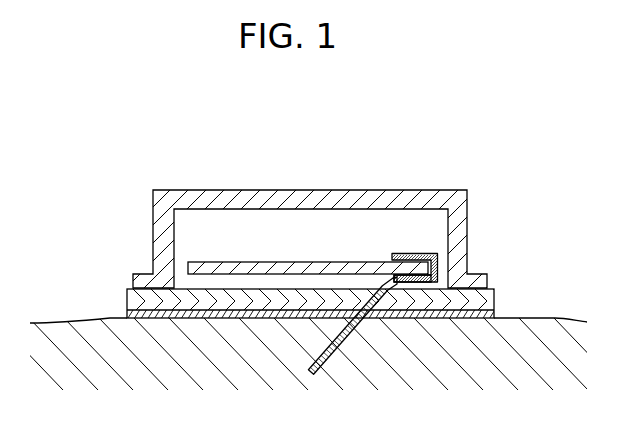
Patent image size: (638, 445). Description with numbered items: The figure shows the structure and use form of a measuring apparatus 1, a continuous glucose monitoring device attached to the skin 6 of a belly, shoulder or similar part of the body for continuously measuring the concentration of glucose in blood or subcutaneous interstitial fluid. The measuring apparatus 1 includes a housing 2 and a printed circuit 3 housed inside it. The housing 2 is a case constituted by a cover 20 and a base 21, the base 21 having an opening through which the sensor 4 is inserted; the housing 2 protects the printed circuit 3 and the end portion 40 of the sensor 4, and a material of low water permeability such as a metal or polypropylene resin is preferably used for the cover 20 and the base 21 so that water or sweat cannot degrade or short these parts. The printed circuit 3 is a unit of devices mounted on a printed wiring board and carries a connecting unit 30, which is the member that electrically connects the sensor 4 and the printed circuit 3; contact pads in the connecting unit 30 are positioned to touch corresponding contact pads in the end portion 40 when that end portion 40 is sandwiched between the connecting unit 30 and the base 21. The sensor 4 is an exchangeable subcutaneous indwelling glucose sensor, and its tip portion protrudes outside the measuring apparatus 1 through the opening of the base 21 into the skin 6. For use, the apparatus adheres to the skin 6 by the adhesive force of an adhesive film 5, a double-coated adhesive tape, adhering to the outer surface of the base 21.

The measuring apparatus 1 is at (388, 188).
The housing 2 is at (537, 244).
The cover 20 is at (469, 251).
The base 21 is at (495, 291).
The printed circuit 3 is at (293, 262).
The connecting unit 30 is at (412, 253).
The sensor 4 is at (349, 339).
The end portion 40 is at (412, 284).
The adhesive film 5 is at (126, 312).
The skin 6 is at (53, 335).